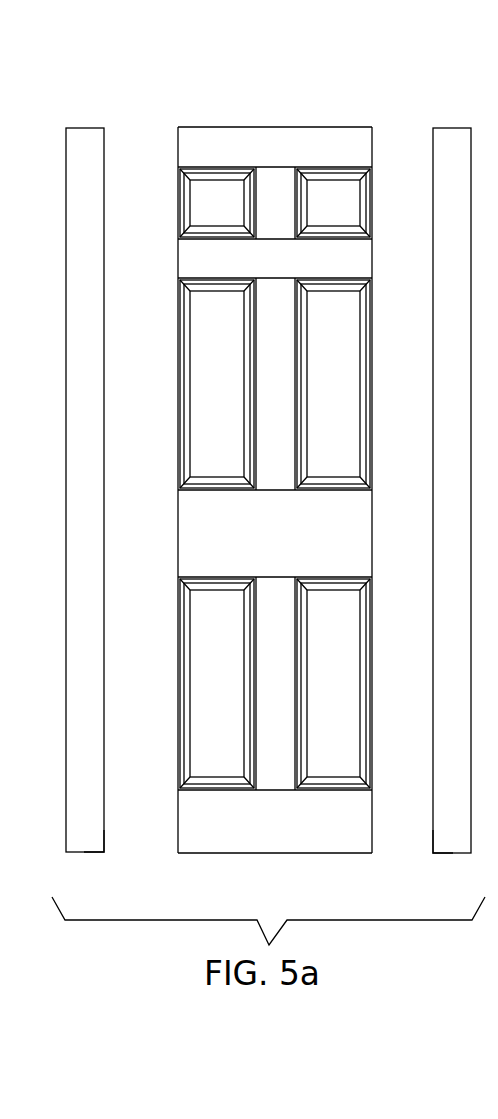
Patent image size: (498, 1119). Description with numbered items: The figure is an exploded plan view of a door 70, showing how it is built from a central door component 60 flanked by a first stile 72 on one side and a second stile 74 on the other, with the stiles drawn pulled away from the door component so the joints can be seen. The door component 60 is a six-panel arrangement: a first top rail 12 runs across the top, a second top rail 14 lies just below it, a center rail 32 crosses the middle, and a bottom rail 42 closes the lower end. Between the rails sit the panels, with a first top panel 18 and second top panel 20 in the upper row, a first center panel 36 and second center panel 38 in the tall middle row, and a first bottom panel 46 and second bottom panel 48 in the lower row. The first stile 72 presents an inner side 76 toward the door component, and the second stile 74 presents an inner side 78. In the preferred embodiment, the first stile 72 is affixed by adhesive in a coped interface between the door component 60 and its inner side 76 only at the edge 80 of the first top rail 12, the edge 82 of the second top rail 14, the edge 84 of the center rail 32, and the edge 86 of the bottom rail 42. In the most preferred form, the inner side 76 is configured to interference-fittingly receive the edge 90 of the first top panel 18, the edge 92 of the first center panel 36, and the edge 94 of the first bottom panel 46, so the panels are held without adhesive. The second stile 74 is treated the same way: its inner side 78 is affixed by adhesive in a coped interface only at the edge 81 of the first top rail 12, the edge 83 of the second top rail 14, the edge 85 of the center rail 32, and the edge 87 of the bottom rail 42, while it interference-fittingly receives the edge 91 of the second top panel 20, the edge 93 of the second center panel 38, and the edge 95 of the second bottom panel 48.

The door 70 is at (233, 33).
The door component 60 is at (286, 97).
The first top rail 12 is at (193, 128).
The second top rail 14 is at (193, 267).
The center rail 32 is at (190, 551).
The bottom rail 42 is at (208, 855).
The first top panel 18 is at (197, 212).
The second top panel 20 is at (355, 205).
The first center panel 36 is at (203, 418).
The second center panel 38 is at (355, 405).
The first bottom panel 46 is at (197, 695).
The second bottom panel 48 is at (352, 712).
The first stile 72 is at (66, 167).
The second stile 74 is at (472, 163).
The inner side of first stile 76 is at (106, 840).
The inner side of second stile 78 is at (432, 848).
The edge of first top rail 80 is at (178, 138).
The edge of first top rail 81 is at (373, 147).
The edge of second top rail 82 is at (178, 248).
The edge of second top rail 83 is at (373, 258).
The edge of center rail 84 is at (177, 510).
The edge of center rail 85 is at (372, 538).
The edge of bottom rail 86 is at (175, 826).
The edge of bottom rail 87 is at (372, 818).
The edge of first top panel 90 is at (178, 183).
The edge of second top panel 91 is at (373, 228).
The edge of first center panel 92 is at (178, 378).
The edge of second center panel 93 is at (372, 448).
The edge of first bottom panel 94 is at (178, 660).
The edge of second bottom panel 95 is at (372, 628).